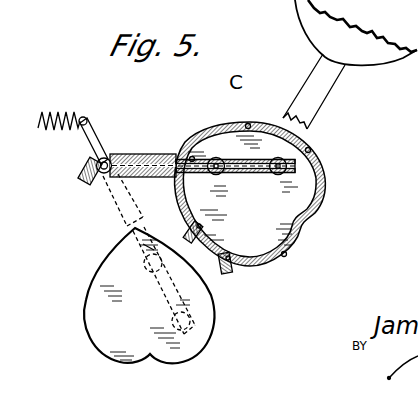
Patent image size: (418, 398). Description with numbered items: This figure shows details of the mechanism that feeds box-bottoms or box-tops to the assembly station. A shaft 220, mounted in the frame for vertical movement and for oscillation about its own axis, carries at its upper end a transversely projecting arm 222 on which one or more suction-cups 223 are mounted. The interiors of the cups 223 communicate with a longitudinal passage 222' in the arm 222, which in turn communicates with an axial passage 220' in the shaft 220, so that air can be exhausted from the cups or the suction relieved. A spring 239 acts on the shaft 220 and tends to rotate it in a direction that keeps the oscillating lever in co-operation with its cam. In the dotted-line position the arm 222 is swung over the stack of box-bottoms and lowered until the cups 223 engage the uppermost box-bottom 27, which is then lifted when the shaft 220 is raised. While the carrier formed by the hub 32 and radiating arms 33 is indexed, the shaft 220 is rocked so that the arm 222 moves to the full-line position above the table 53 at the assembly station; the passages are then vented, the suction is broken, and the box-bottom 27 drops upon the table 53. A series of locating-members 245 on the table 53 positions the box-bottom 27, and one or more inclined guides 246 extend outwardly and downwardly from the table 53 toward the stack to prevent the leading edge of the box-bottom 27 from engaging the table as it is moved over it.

The box-bottom 27 is at (100, 288).
The hub 32 is at (374, 43).
The radiating arms 33 is at (328, 80).
The table 53 is at (319, 154).
The shaft 220 is at (108, 141).
The axial passage 220' is at (128, 245).
The arm 222 is at (143, 152).
The longitudinal passage 222' is at (235, 137).
The suction-cups 223 is at (246, 192).
The spring 239 is at (70, 131).
The locating-members 245 is at (249, 124).
The inclined guides 246 is at (190, 229).